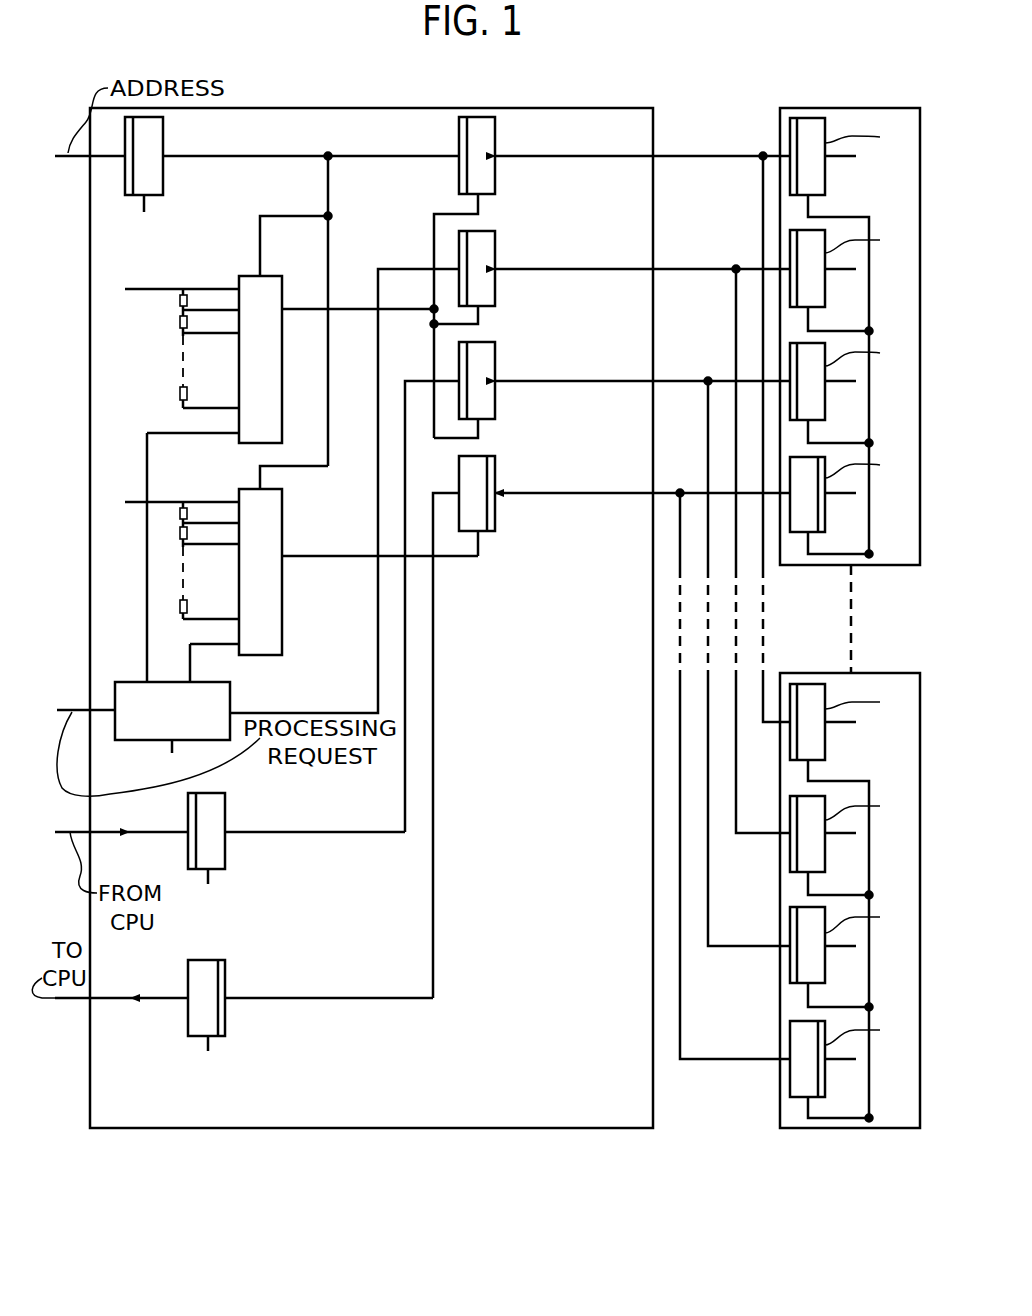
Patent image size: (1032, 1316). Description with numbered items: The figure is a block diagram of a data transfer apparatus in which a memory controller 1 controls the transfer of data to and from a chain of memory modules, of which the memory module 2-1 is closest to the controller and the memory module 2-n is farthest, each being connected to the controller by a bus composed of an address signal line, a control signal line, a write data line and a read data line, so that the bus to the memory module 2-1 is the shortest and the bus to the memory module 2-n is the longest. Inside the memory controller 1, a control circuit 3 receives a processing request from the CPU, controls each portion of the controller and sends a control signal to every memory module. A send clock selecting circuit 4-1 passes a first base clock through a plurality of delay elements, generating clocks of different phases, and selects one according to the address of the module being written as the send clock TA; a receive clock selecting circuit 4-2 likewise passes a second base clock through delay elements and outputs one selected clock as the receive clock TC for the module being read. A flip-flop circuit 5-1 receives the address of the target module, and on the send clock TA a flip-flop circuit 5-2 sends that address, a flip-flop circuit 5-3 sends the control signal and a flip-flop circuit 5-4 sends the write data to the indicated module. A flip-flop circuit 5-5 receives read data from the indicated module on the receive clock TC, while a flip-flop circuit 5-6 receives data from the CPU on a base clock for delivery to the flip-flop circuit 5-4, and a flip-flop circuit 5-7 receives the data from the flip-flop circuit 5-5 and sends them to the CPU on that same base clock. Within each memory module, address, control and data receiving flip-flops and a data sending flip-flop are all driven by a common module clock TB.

The memory controller 1 is at (482, 1129).
The memory module 2-1 is at (780, 125).
The memory module 2-n is at (780, 1104).
The control circuit 3 is at (230, 700).
The send clock selecting circuit 4-1 is at (248, 275).
The receive clock selecting circuit 4-2 is at (240, 489).
The flip-flop circuit 5-1 is at (163, 142).
The flip-flop circuit 5-2 is at (495, 147).
The flip-flop circuit 5-3 is at (495, 255).
The flip-flop circuit 5-4 is at (495, 366).
The flip-flop circuit 5-5 is at (495, 478).
The flip-flop circuit 5-6 is at (225, 812).
The flip-flop circuit 5-7 is at (225, 975).